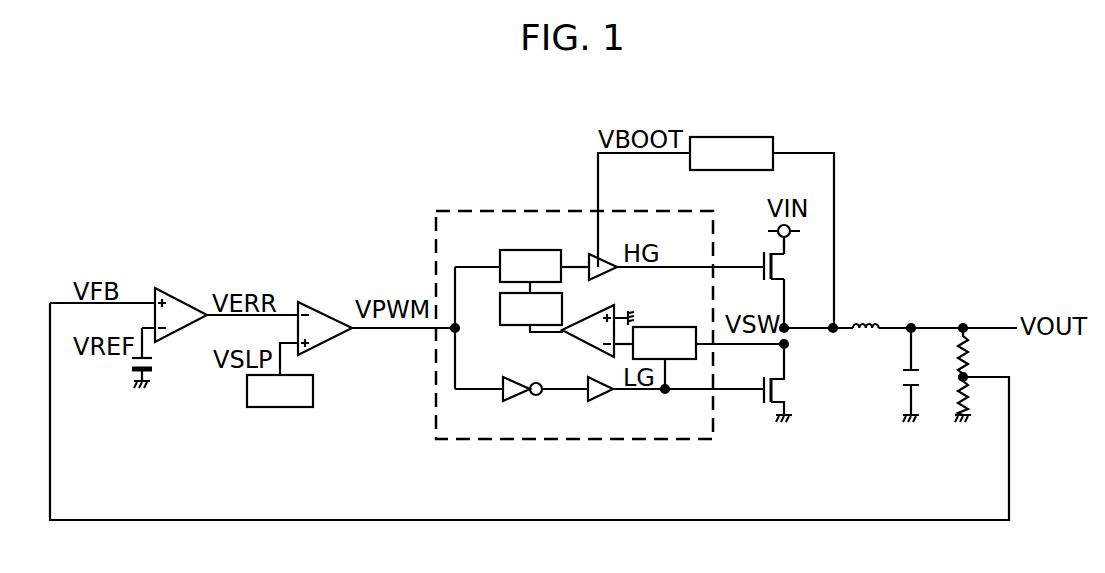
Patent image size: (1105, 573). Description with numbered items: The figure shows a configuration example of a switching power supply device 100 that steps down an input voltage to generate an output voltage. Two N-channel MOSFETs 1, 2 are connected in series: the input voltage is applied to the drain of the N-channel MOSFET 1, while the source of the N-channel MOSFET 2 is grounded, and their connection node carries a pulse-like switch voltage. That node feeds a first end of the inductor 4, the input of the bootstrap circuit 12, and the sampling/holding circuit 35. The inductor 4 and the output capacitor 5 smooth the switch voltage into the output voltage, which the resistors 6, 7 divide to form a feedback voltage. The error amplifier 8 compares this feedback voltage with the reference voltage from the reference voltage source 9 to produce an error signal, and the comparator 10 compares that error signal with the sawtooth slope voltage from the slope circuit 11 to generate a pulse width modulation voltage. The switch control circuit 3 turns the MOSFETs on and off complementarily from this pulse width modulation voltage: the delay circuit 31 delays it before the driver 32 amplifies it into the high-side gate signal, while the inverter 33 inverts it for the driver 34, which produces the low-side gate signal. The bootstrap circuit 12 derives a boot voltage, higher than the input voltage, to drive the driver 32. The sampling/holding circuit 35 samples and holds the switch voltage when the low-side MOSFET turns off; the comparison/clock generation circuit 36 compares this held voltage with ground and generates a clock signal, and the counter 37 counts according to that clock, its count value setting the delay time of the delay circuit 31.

The switching power supply device 100 is at (283, 143).
The N-channel MOSFET 1 is at (789, 266).
The N-channel MOSFET 2 is at (789, 388).
The switch control circuit 3 is at (513, 211).
The inductor 4 is at (865, 319).
The output capacitor 5 is at (921, 380).
The resistor 6 is at (970, 352).
The resistor 7 is at (970, 392).
The error amplifier 8 is at (176, 297).
The reference voltage source 9 is at (153, 370).
The comparator 10 is at (316, 310).
The slope circuit 11 is at (313, 391).
The bootstrap circuit 12 is at (735, 137).
The delay circuit 31 is at (531, 250).
The driver 32 is at (592, 253).
The inverter 33 is at (516, 403).
The driver 34 is at (599, 403).
The sampling/holding circuit 35 is at (666, 327).
The comparison/clock generation circuit 36 is at (597, 313).
The counter 37 is at (513, 326).